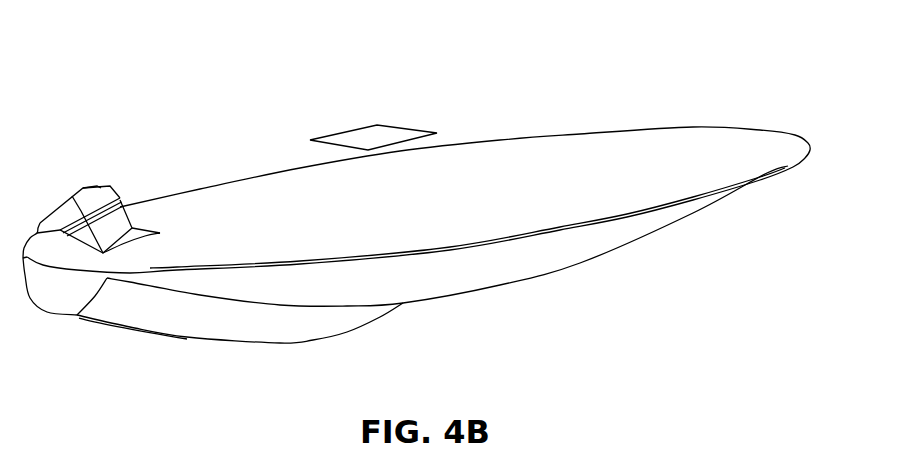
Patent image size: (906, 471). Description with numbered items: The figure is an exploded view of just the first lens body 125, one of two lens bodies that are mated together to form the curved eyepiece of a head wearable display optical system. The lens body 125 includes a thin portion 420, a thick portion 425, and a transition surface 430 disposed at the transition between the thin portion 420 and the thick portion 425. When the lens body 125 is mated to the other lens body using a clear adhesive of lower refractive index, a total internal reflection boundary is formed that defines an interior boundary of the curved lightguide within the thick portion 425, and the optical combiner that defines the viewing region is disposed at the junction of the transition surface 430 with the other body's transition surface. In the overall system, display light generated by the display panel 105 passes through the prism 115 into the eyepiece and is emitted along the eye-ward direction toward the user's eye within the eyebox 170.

The display panel 105 is at (94, 188).
The prism 115 is at (113, 223).
The first lens body 125 is at (618, 90).
The eyebox 170 is at (380, 135).
The thin portion 420 is at (493, 277).
The thick portion 425 is at (73, 300).
The transition surface 430 is at (230, 330).